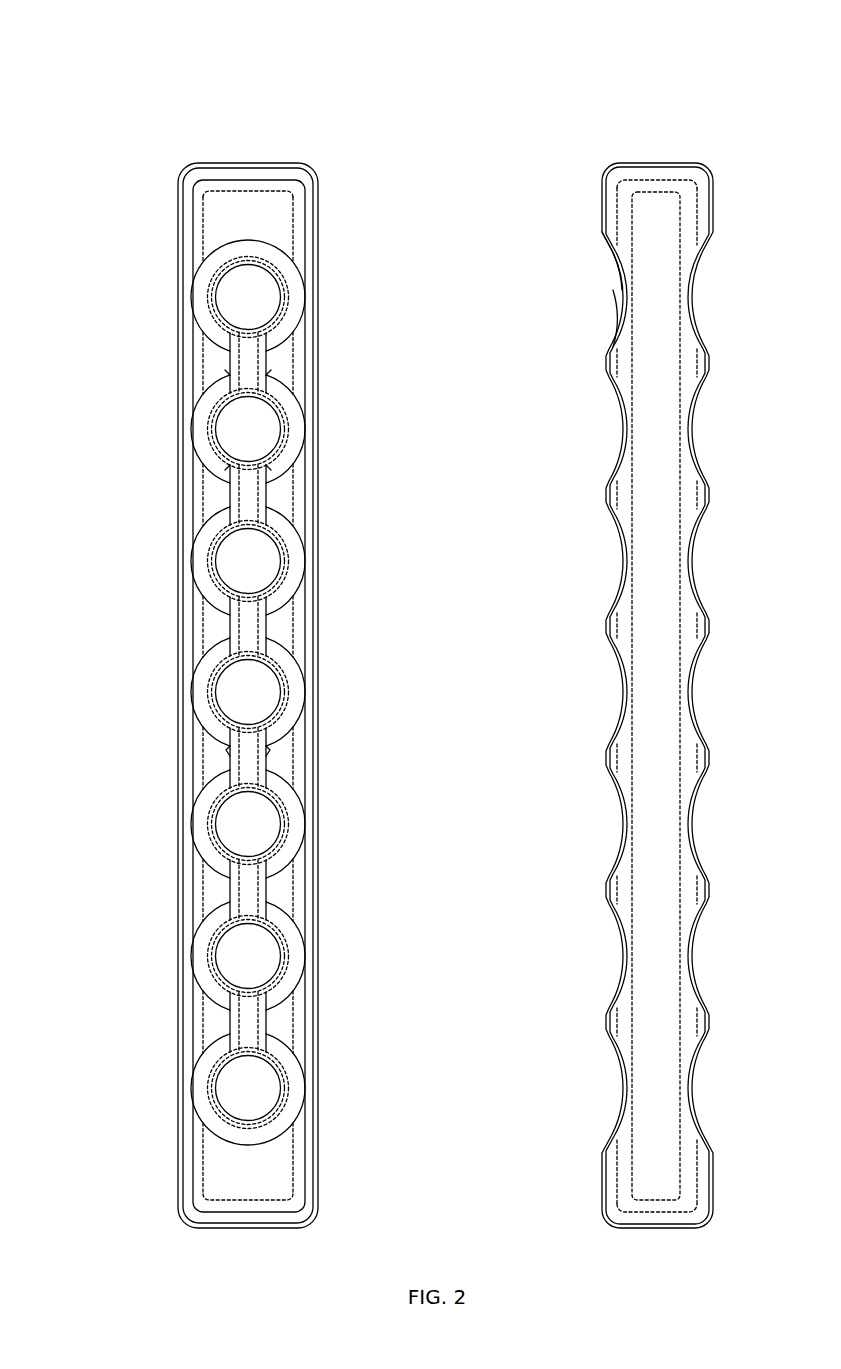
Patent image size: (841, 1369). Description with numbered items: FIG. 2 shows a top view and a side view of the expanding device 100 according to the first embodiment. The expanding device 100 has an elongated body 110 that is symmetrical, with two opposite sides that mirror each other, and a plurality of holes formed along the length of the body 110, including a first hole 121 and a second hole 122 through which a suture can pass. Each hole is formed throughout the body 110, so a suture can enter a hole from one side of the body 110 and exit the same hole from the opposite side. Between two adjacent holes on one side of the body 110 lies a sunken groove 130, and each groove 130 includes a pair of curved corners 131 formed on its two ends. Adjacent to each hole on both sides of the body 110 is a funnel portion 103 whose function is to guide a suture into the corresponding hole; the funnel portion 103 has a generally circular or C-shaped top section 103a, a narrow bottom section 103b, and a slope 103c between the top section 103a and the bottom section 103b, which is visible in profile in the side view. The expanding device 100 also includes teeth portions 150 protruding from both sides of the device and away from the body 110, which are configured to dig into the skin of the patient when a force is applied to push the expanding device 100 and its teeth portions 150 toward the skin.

The expanding device 100 is at (613, 146).
The body 110 is at (221, 210).
The funnel portion 103 is at (263, 250).
The top section 103a is at (604, 240).
The bottom section 103b is at (619, 288).
The slope 103c is at (617, 262).
The first hole 121 is at (236, 302).
The second hole 122 is at (236, 1090).
The sunken groove 130 is at (255, 357).
The curved corner 131 is at (265, 390).
The teeth portion 150 is at (222, 753).